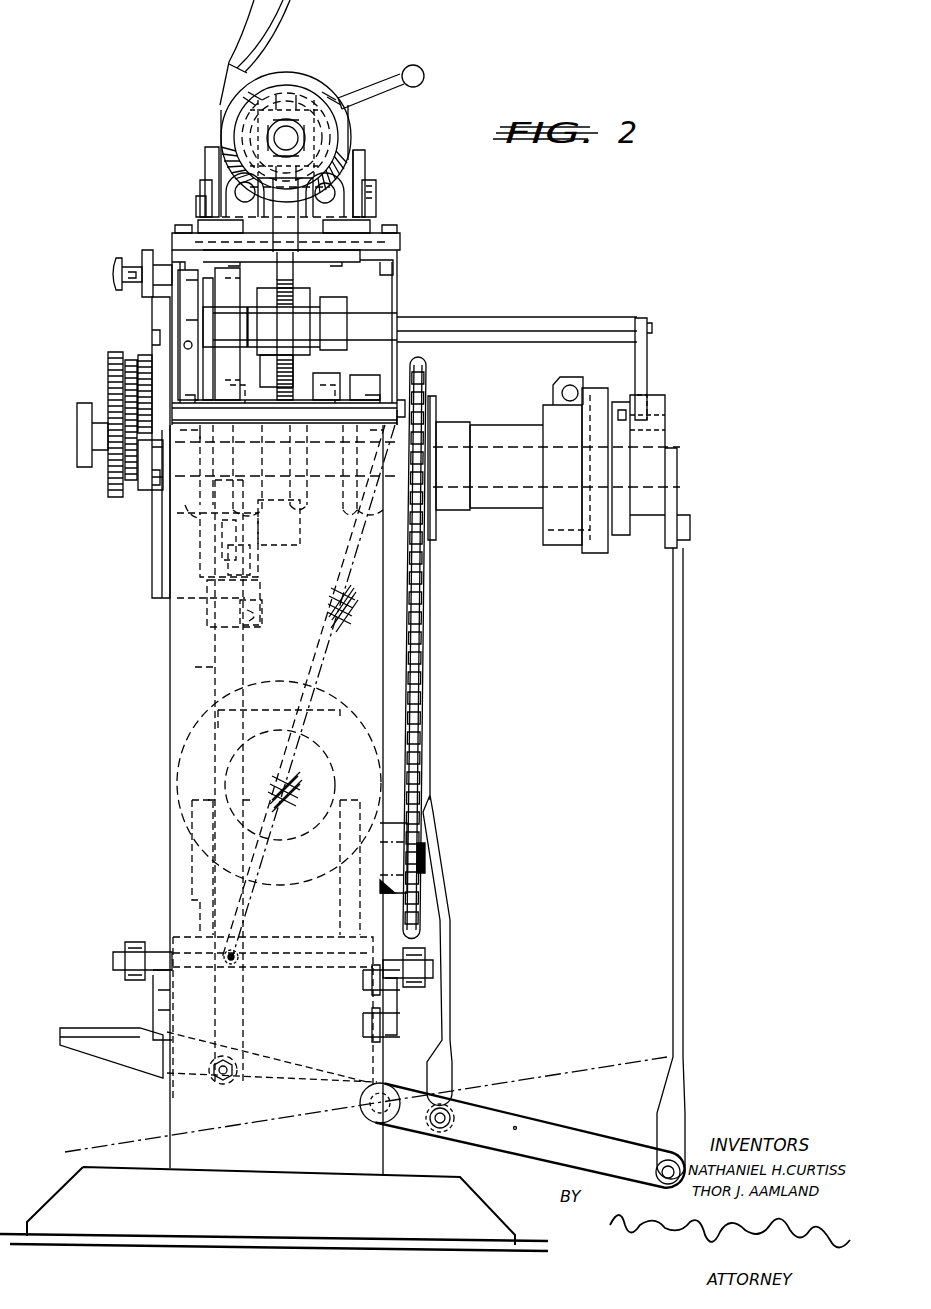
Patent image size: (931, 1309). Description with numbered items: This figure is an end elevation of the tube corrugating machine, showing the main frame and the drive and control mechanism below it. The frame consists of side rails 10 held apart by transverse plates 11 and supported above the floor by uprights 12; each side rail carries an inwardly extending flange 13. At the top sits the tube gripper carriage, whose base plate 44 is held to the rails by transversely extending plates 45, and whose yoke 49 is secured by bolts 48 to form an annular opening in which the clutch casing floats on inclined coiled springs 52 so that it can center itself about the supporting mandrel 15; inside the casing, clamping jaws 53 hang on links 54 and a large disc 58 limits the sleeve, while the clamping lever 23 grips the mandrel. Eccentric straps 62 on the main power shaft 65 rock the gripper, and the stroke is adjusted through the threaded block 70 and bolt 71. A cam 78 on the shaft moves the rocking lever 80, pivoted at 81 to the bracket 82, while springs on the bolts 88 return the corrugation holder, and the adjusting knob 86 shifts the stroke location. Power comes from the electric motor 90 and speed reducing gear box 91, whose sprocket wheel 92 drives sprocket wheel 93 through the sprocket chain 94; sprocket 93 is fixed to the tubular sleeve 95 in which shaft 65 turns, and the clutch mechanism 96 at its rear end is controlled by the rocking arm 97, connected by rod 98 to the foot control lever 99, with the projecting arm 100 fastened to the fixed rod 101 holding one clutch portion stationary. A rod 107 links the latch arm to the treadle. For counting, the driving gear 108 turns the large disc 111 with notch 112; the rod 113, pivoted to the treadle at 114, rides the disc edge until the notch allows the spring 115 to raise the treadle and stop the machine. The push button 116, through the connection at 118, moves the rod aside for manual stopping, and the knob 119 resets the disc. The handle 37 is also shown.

The side rail 10 is at (397, 290).
The transverse plate 11 is at (410, 240).
The upright 12 is at (172, 890).
The inwardly extending flange 13 is at (393, 272).
The supporting mandrel 15 is at (268, 137).
The clamping lever 23 is at (389, 82).
The handle 37 is at (245, 40).
The base plate 44 is at (358, 208).
The transversely extending plate 45 is at (377, 228).
The bolt 48 is at (219, 107).
The yoke 49 is at (310, 73).
The inclined coiled spring 52 is at (232, 174).
The clamping jaw 53 is at (303, 113).
The link 54 is at (316, 86).
The large disc 58 is at (353, 163).
The eccentric strap 62 is at (251, 540).
The main power shaft 65 is at (512, 463).
The threaded block 70 is at (300, 322).
The bolt 71 is at (294, 288).
The cam 78 is at (273, 538).
The rocking lever 80 is at (278, 272).
The pivot 81 is at (203, 186).
The bracket 82 is at (198, 207).
The adjusting knob 86 is at (147, 253).
The bolt 88 is at (375, 200).
The electric motor 90 is at (180, 770).
The speed reducing gear box 91 is at (207, 857).
The sprocket wheel 92 is at (418, 913).
The sprocket wheel 93 is at (428, 372).
The sprocket chain 94 is at (415, 677).
The tubular sleeve 95 is at (503, 502).
The clutch mechanism 96 is at (572, 545).
The rocking arm 97 is at (675, 500).
The rod 98 is at (677, 715).
The foot control lever 99 is at (140, 1067).
The projecting arm 100 is at (645, 368).
The fixed rod 101 is at (533, 305).
The rod 107 is at (441, 877).
The driving gear 108 is at (108, 490).
The large disc 111 is at (240, 363).
The notch 112 is at (240, 558).
The rod 113 is at (215, 670).
The pivot 114 is at (233, 1057).
The spring 115 is at (320, 647).
The push button 116 is at (110, 272).
The connection 118 is at (260, 613).
The knob 119 is at (78, 436).